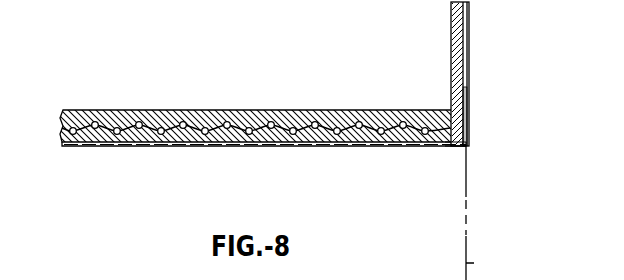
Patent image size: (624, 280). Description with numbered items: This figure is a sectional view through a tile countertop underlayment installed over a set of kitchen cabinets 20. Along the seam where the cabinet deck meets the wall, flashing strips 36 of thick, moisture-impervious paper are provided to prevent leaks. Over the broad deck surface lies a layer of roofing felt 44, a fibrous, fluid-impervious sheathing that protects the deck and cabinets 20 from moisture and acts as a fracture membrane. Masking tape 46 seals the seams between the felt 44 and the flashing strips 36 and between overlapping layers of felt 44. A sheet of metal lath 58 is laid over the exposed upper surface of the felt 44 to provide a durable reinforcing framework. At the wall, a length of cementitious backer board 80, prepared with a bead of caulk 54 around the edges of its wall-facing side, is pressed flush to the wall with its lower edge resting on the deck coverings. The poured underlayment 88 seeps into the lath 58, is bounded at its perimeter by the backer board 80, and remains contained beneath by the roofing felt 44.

The kitchen cabinets 20 is at (476, 263).
The flashing strips 36 is at (469, 118).
The roofing felt 44 is at (190, 150).
The masking tape 46 is at (438, 147).
The bead of caulk 54 is at (469, 57).
The metal lath 58 is at (404, 112).
The cementitious backer board 80 is at (450, 86).
The underlayment 88 is at (206, 110).